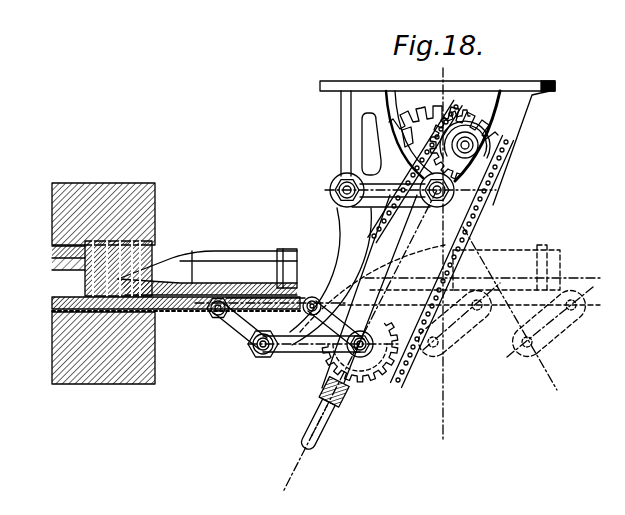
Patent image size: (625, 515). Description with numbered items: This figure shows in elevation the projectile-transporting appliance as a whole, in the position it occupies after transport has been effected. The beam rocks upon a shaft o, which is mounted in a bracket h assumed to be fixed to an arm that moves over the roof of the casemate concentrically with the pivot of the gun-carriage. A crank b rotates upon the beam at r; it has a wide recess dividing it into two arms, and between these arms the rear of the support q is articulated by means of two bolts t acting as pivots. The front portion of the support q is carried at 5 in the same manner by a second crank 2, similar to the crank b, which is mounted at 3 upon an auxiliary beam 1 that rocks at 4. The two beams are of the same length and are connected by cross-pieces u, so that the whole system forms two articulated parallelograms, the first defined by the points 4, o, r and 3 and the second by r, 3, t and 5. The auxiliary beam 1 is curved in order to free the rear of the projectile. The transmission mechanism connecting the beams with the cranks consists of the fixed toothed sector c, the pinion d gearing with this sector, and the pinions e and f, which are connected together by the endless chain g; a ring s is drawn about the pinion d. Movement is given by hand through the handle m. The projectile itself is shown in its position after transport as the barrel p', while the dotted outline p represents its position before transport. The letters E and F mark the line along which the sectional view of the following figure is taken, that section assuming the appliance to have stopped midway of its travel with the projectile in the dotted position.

The bracket h is at (322, 160).
The fixed toothed sector c is at (427, 107).
The section line E F E is at (470, 138).
The pinion d is at (488, 143).
The ring s is at (490, 160).
The shaft o is at (458, 190).
The endless chain g is at (464, 213).
The rocking point of auxiliary beam 4 is at (338, 191).
The pinion e is at (420, 121).
The auxiliary beam 1 is at (330, 276).
The gun barrel p' is at (207, 256).
The bolts t is at (316, 296).
The barrel (dashed position) p is at (507, 251).
The support q is at (158, 306).
The front pivot of support 5 is at (210, 314).
The second crank 2 is at (237, 331).
The mounting point of second crank 3 is at (256, 352).
The cross-pieces u is at (296, 357).
The crank b is at (314, 357).
The rotation point of crank r is at (378, 370).
The handle m is at (314, 418).
The pinion f is at (331, 408).
The section line E F is at (360, 341).